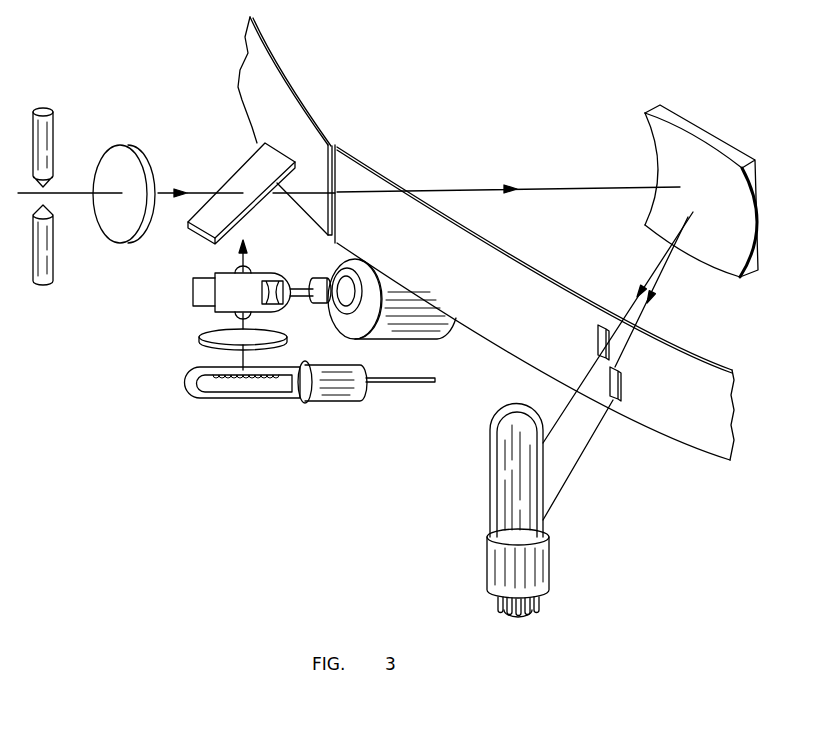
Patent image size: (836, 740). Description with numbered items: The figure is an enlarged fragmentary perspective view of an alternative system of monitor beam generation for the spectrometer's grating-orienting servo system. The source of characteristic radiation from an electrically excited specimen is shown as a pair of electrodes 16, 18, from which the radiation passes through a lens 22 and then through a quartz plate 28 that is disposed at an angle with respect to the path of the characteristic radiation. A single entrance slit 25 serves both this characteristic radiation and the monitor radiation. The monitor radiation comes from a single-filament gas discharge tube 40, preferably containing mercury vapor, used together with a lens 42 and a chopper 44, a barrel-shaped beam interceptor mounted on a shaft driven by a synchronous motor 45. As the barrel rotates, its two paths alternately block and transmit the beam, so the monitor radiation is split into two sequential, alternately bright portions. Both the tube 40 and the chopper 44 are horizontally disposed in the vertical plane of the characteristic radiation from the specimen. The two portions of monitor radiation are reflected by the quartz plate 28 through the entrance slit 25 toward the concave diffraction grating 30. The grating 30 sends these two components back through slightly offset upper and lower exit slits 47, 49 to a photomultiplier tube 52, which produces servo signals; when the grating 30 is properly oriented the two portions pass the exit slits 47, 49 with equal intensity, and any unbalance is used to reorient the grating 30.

The electrode 16 is at (46, 133).
The electrode 18 is at (48, 268).
The lens 22 is at (117, 158).
The entrance slit 25 is at (336, 145).
The quartz plate 28 is at (257, 164).
The concave diffraction grating 30 is at (698, 152).
The gas discharge tube 40 is at (245, 396).
The lens 42 is at (212, 336).
The chopper 44 is at (193, 291).
The synchronous motor 45 is at (400, 325).
The upper exit slit 47 is at (598, 335).
The lower exit slit 49 is at (618, 385).
The photomultiplier tube 52 is at (504, 473).